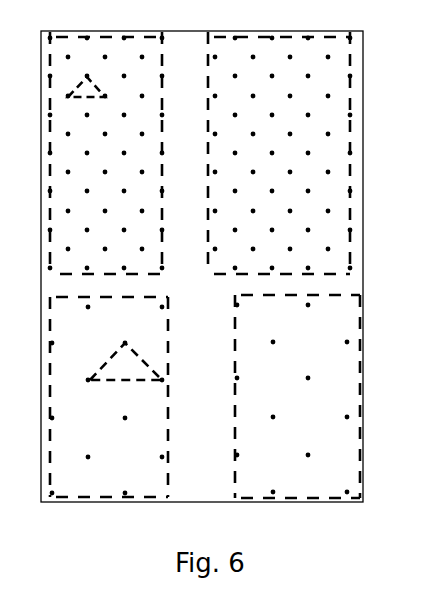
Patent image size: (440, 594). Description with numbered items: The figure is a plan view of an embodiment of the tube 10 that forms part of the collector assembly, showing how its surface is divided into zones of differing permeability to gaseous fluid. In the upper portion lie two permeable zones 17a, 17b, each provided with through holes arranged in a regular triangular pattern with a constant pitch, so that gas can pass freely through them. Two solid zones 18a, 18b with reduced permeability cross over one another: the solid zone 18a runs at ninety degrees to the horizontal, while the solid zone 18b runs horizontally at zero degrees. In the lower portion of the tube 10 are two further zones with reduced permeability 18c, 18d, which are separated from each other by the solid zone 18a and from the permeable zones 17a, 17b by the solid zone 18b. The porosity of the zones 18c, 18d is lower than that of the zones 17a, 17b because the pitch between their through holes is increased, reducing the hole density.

The tube 10 is at (375, 167).
The permeable zone 17a is at (133, 173).
The permeable zone 17b is at (306, 176).
The solid zone with reduced permeability 18a is at (204, 218).
The solid zone with reduced permeability 18b is at (279, 291).
The zone with reduced permeability 18c is at (119, 417).
The zone with reduced permeability 18d is at (328, 427).